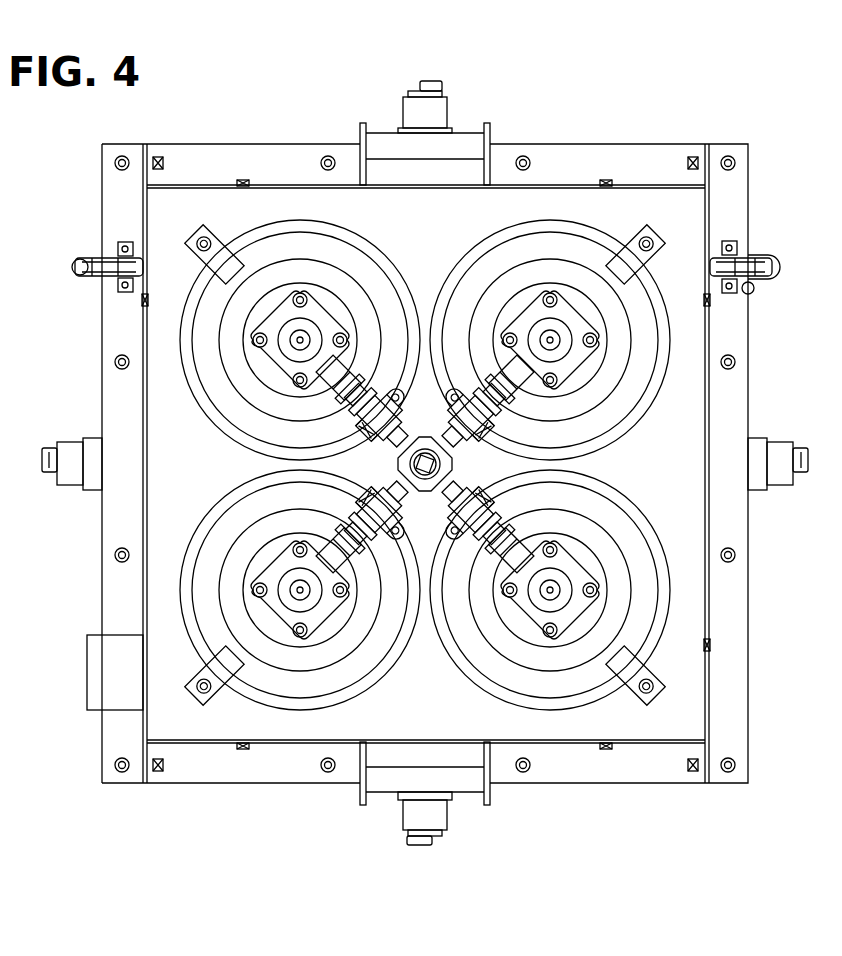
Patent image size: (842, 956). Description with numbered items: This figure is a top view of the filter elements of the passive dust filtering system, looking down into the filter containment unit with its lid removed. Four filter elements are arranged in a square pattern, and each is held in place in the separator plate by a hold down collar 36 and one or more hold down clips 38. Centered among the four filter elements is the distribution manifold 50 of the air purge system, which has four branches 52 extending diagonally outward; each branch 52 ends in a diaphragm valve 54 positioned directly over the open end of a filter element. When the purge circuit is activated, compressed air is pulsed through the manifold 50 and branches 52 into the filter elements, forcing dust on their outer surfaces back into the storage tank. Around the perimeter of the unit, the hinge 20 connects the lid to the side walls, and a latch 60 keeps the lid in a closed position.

The hinge 20 is at (146, 784).
The hold down collar 36 is at (638, 333).
The hold down clip 38 is at (626, 663).
The distribution manifold 50 is at (447, 464).
The branch 52 is at (342, 372).
The diaphragm valve 54 is at (290, 342).
The latch 60 is at (775, 268).